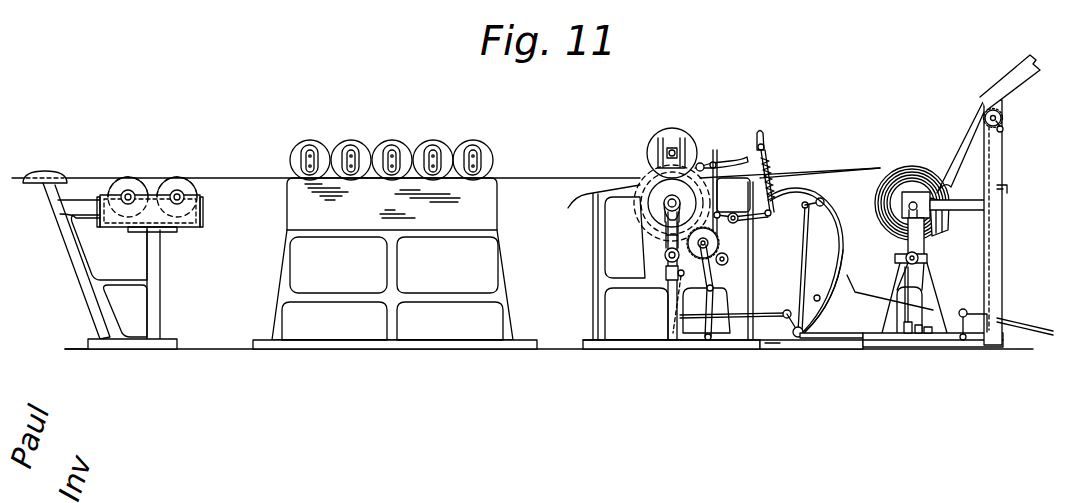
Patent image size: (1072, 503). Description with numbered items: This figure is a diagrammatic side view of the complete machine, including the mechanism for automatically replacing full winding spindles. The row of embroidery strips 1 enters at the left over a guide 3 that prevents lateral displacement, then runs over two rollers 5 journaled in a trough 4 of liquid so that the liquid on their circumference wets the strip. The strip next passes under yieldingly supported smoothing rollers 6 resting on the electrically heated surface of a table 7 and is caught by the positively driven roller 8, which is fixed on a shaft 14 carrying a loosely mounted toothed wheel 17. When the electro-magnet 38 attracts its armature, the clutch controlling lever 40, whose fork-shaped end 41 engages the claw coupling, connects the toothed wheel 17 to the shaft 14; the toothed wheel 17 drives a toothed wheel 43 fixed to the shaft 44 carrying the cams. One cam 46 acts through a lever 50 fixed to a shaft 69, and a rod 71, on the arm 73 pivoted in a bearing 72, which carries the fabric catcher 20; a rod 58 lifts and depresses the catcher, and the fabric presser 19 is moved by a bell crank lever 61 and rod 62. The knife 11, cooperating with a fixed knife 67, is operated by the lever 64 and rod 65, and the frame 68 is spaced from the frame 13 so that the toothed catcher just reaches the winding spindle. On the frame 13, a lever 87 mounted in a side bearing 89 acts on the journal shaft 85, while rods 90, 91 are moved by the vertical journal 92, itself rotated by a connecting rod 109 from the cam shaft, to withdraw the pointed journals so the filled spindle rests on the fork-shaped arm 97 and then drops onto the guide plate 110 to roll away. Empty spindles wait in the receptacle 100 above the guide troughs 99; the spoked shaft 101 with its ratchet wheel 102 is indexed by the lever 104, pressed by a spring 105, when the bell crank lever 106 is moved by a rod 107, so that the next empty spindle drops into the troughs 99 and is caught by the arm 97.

The strip 1 is at (880, 168).
The guide 3 is at (50, 175).
The trough 4 is at (190, 224).
The rollers 5 is at (165, 190).
The smoothing rollers 6 is at (320, 146).
The table 7 is at (293, 207).
The roller 8 is at (663, 215).
The knife 11 is at (760, 131).
The frame 13 is at (930, 278).
The shaft 14 is at (664, 203).
The toothed wheel 17 is at (645, 173).
The fabric presser 19 is at (718, 160).
The fabric catcher 20 is at (855, 165).
The electro-magnet 38 is at (664, 257).
The clutch controlling lever 40 is at (668, 240).
The fork-shaped end 41 is at (662, 220).
The toothed wheel 43 is at (719, 243).
The shaft 44 is at (725, 270).
The cam 46 is at (728, 260).
The lever 50 is at (662, 276).
The rod 58 is at (824, 210).
The bell crank lever 61 is at (740, 220).
The rod 62 is at (698, 160).
The lever 64 is at (771, 214).
The rod 65 is at (772, 163).
The knife 67 is at (790, 186).
The frame 68 is at (598, 215).
The shaft 69 is at (678, 285).
The rod 71 is at (694, 320).
The bearing 72 is at (812, 330).
The arm 73 is at (841, 245).
The shaft 85 is at (940, 226).
The lever 87 is at (905, 275).
The side bearing 89 is at (927, 258).
The rod 90 is at (919, 334).
The rod 91 is at (906, 334).
The vertical journal 92 is at (926, 334).
The arm 97 is at (880, 210).
The guide troughs 99 is at (958, 145).
The receptacle 100 is at (1015, 78).
The shaft 101 is at (1003, 119).
The ratchet wheel 102 is at (1003, 130).
The lever 104 is at (1002, 262).
The spring 105 is at (1002, 183).
The bell crank lever 106 is at (975, 312).
The rod 107 is at (936, 345).
The connecting rod 109 is at (870, 340).
The guide plate 110 is at (840, 345).